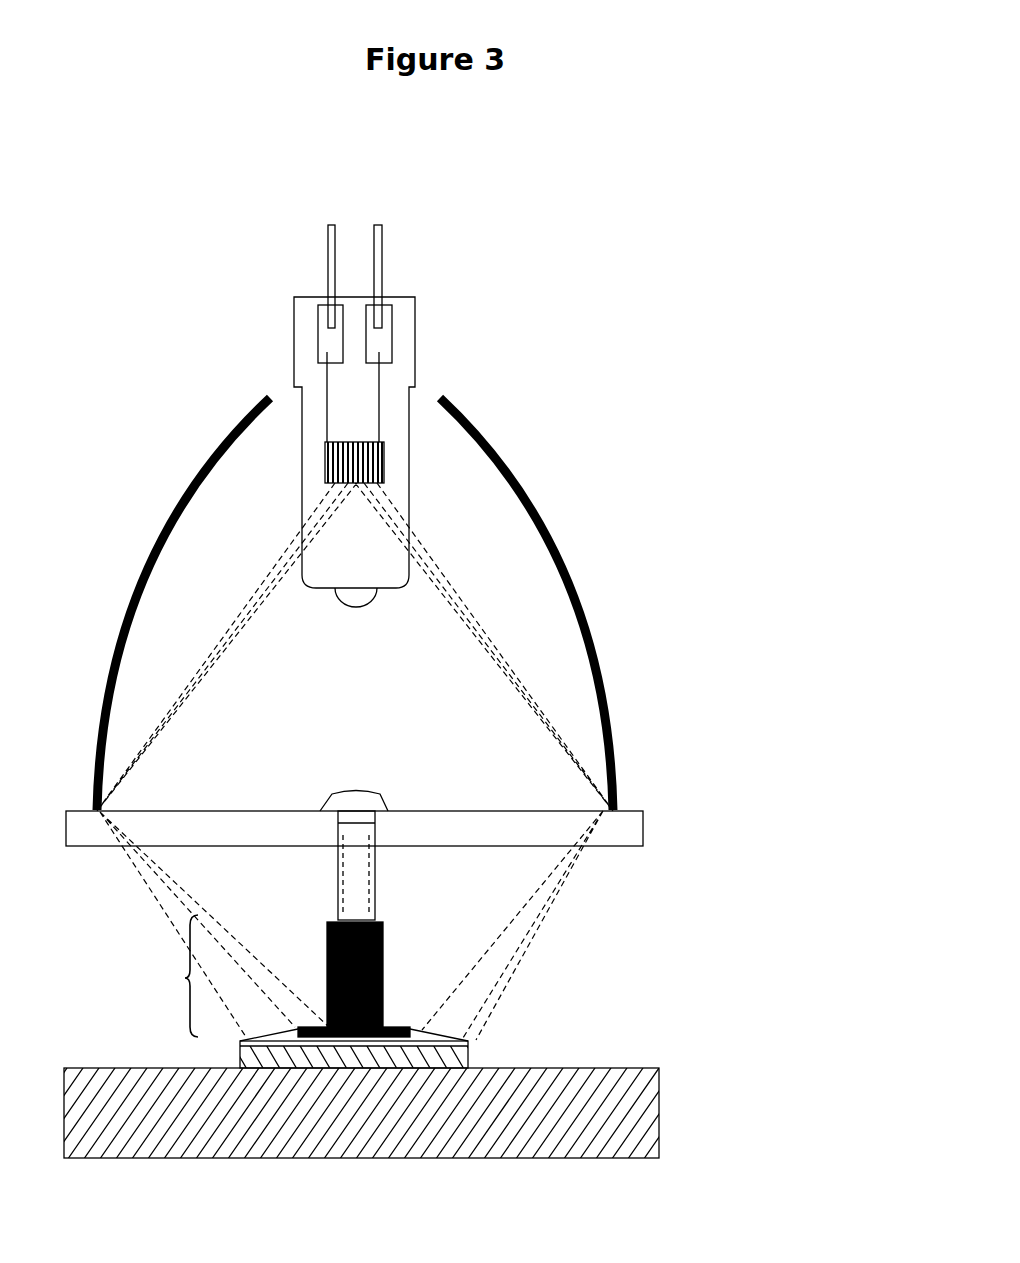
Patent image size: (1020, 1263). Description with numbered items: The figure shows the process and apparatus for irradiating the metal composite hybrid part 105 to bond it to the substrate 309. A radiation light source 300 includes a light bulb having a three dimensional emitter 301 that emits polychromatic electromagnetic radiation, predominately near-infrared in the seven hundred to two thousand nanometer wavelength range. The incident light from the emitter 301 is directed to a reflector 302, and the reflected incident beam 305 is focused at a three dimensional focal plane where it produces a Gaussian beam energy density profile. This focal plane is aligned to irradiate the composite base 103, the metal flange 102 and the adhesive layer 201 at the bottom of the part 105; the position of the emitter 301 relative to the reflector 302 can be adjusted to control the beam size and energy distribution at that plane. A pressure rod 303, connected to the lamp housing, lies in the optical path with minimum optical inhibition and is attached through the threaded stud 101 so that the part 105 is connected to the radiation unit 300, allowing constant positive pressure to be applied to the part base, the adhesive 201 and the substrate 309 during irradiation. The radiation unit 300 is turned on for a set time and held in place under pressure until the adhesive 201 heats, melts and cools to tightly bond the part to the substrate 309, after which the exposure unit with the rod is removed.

The radiation light source 300 is at (305, 243).
The three dimensional emitter 301 is at (381, 445).
The reflector 302 is at (539, 477).
The pressure rod 303 is at (383, 856).
The metal threaded rod 101 is at (393, 923).
The reflected incident beam 305 is at (584, 860).
The metal flange base 102 is at (403, 1019).
The fiber-reinforced polymer composite 103 is at (434, 1018).
The polymeric adhesive layer 201 is at (474, 1047).
The substrate 309 is at (664, 1106).
The metal composite hybrid part 105 is at (160, 976).